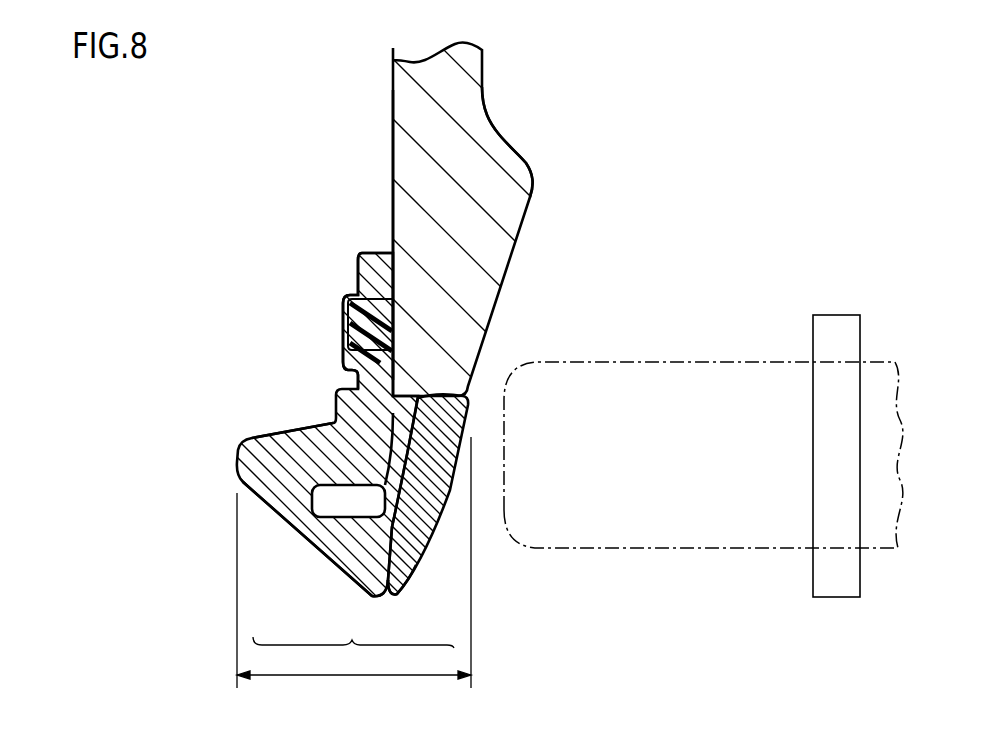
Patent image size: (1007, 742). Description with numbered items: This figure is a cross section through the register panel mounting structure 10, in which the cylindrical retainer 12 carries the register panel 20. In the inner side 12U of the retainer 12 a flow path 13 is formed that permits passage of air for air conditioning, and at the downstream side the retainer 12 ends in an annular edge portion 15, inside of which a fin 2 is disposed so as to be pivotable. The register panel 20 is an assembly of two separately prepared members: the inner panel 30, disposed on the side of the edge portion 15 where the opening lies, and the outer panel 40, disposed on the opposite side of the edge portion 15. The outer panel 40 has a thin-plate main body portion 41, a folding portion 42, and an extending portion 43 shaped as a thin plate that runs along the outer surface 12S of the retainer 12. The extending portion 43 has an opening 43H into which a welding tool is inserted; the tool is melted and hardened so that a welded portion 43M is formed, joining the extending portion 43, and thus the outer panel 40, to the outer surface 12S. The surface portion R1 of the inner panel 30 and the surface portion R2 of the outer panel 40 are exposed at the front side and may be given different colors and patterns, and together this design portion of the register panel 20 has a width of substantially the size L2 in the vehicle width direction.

The fin 2 is at (708, 362).
The register panel mounting structure 10 is at (493, 573).
The retainer 12 is at (435, 113).
The outer surface of the retainer 12S is at (393, 183).
The inner side of the retainer 12U is at (530, 193).
The flow path 13 is at (790, 226).
The edge portion 15 is at (347, 500).
The register panel 20 is at (353, 655).
The inner panel 30 is at (418, 568).
The outer panel 40 is at (312, 555).
The main body portion 41 is at (300, 505).
The folding portion 42 is at (313, 465).
The extending portion 43 is at (380, 283).
The opening 43H is at (368, 324).
The welded portion 43M is at (373, 330).
The surface portion of the inner panel R1 is at (447, 507).
The surface portion of the outer panel R2 is at (290, 540).
The size of the design portion width L2 is at (358, 675).